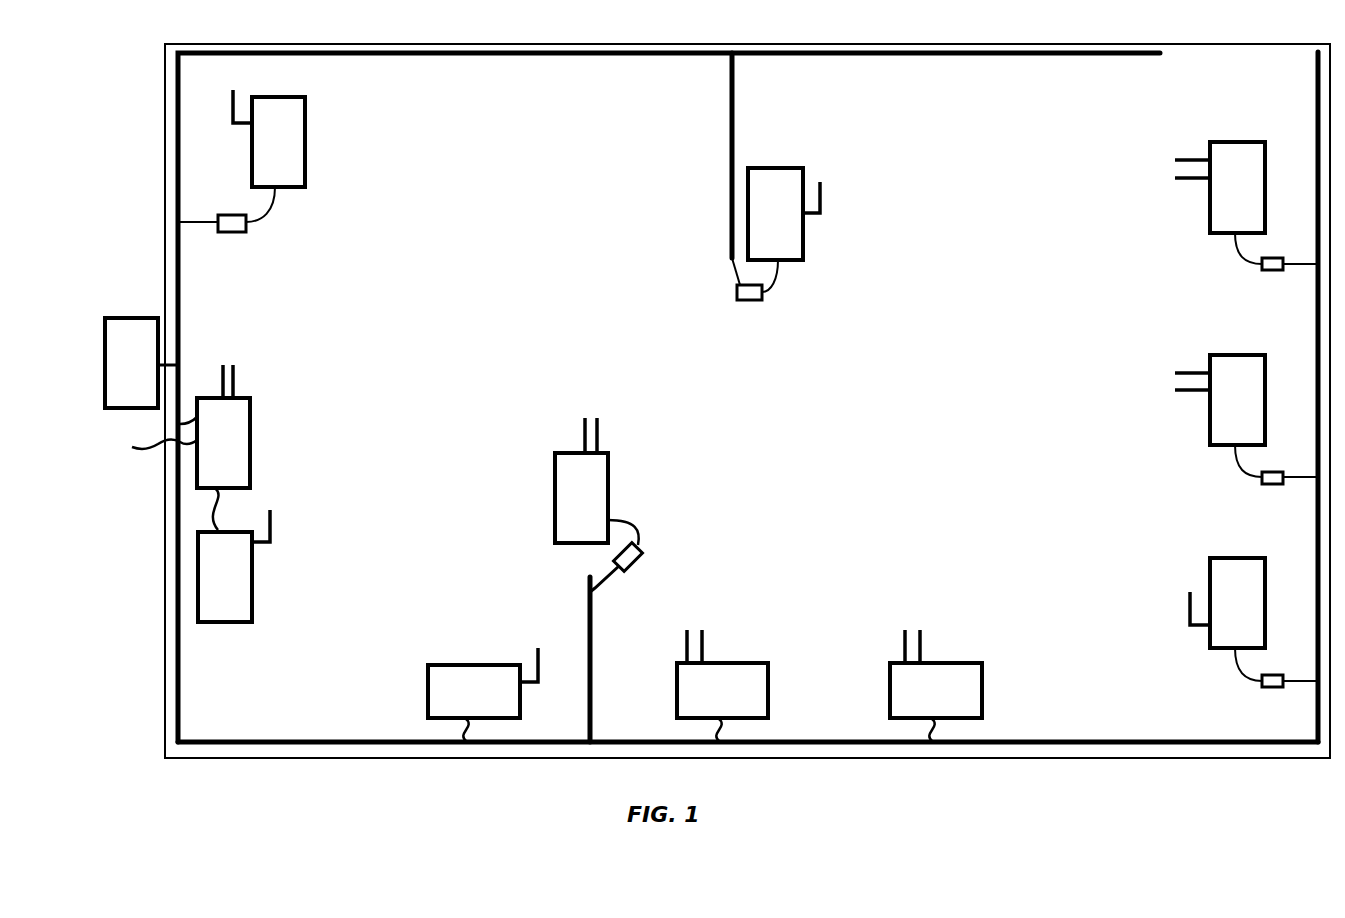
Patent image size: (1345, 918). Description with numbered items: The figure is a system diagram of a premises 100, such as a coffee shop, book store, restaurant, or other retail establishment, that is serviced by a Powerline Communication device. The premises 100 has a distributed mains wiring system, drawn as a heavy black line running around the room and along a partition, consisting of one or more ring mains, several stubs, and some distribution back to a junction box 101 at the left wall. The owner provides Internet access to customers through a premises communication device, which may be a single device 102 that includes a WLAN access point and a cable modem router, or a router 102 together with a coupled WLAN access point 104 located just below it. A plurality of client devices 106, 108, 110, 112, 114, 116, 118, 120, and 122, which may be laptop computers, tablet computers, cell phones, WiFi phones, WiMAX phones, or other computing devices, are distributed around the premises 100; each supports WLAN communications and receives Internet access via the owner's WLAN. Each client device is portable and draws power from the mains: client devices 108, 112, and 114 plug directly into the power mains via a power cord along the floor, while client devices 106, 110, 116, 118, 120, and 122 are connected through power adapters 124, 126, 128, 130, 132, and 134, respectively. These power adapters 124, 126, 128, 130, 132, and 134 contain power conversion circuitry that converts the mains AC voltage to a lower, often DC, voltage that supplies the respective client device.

The premises 100 is at (246, 792).
The junction box 101 is at (133, 318).
The premises communication device 102 is at (250, 412).
The WLAN access point 104 is at (252, 570).
The client device 106 is at (305, 105).
The client device 108 is at (443, 665).
The client device 110 is at (608, 468).
The client device 112 is at (745, 663).
The client device 114 is at (968, 663).
The client device 116 is at (1210, 575).
The client device 118 is at (1228, 355).
The client device 120 is at (1228, 142).
The client device 122 is at (780, 168).
The power adapter 124 is at (240, 232).
The power adapter 126 is at (641, 558).
The power adapter 128 is at (1272, 688).
The power adapter 130 is at (1272, 485).
The power adapter 132 is at (1272, 272).
The power adapter 134 is at (750, 300).